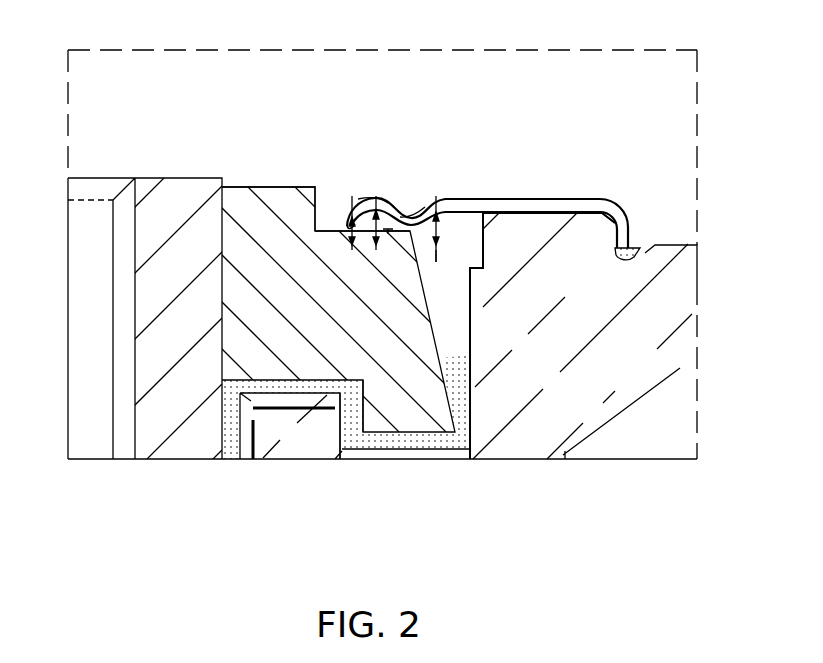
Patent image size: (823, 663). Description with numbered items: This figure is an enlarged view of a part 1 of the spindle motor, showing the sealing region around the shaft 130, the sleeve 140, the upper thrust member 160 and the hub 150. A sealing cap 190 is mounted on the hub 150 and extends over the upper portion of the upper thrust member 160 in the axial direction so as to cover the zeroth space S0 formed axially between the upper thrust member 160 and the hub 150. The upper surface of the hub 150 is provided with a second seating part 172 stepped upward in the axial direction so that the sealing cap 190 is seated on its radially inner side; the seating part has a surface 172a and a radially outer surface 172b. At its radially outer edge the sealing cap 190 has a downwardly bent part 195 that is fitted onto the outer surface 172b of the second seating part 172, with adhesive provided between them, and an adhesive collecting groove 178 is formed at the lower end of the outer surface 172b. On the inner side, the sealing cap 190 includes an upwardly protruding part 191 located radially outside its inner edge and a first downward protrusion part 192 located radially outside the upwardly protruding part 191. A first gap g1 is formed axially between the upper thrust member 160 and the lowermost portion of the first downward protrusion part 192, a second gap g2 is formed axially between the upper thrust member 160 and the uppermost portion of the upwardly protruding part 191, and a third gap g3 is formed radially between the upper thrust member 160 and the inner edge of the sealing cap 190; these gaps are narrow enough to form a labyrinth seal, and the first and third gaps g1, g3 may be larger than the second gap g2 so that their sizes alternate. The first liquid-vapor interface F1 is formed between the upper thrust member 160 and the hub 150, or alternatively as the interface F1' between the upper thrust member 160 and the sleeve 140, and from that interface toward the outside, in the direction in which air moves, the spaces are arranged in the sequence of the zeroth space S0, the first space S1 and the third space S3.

The part 1 is at (93, 37).
The shaft 130 is at (189, 450).
The sleeve 140 is at (293, 448).
The hub 150 is at (652, 318).
The upper thrust member 160 is at (404, 355).
The second seating part 172 is at (523, 215).
The horizontal portion of bracket 172a is at (563, 218).
The outer surface of the second seating part 172b is at (614, 238).
The adhesive collecting groove 178 is at (632, 254).
The sealing cap 190 is at (549, 198).
The upwardly protruding part 191 is at (377, 198).
The first downward protrusion part 192 is at (417, 200).
The downwardly bent part 195 is at (626, 225).
The first liquid-vapor interface F1 is at (356, 428).
The first liquid-vapor interface F1' is at (357, 449).
The zeroth space S0 is at (443, 274).
The first space S1 is at (388, 231).
The third space S3 is at (322, 210).
The first gap g1 is at (487, 198).
The second gap g2 is at (388, 200).
The third gap g3 is at (348, 203).